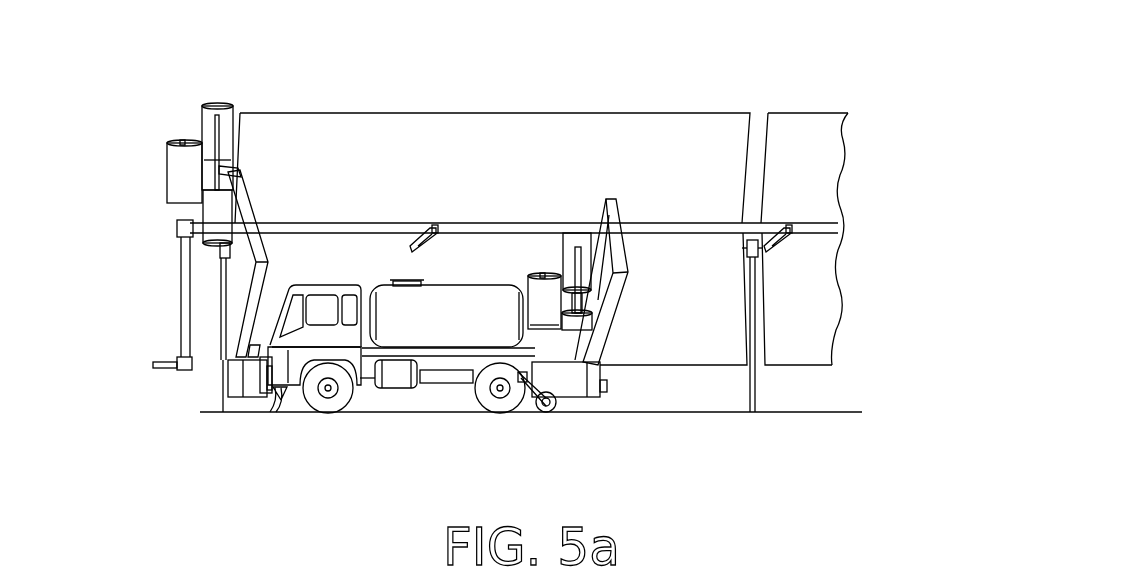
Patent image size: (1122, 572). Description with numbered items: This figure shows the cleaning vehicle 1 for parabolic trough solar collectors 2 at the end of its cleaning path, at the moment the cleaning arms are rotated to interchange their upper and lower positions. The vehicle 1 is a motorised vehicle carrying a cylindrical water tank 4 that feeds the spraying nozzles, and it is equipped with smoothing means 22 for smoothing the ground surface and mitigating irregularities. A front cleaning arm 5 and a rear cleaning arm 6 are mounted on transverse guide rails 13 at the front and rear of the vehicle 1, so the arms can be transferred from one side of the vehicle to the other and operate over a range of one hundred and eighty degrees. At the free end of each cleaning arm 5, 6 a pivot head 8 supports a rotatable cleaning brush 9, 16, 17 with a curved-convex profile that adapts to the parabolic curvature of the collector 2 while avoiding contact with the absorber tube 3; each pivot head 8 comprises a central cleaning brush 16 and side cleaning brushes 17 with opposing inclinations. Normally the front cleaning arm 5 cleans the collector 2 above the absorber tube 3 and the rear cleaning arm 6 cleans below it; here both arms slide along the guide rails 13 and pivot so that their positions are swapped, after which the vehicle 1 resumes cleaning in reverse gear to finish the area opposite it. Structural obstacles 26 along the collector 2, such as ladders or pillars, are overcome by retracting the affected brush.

The cleaning vehicle 1 is at (252, 424).
The parabolic trough solar collector 2 is at (672, 123).
The absorber tube 3 is at (450, 226).
The water tank 4 is at (484, 305).
The front cleaning arm 5 is at (271, 277).
The rear cleaning arm 6 is at (631, 255).
The pivot head 8 is at (225, 170).
The cleaning brush 9 is at (357, 250).
The transverse guide rail 13 is at (238, 388).
The central cleaning brush 16 is at (180, 183).
The side cleaning brush 17 is at (227, 113).
The smoothing means 22 is at (278, 396).
The obstacle 26 is at (420, 236).